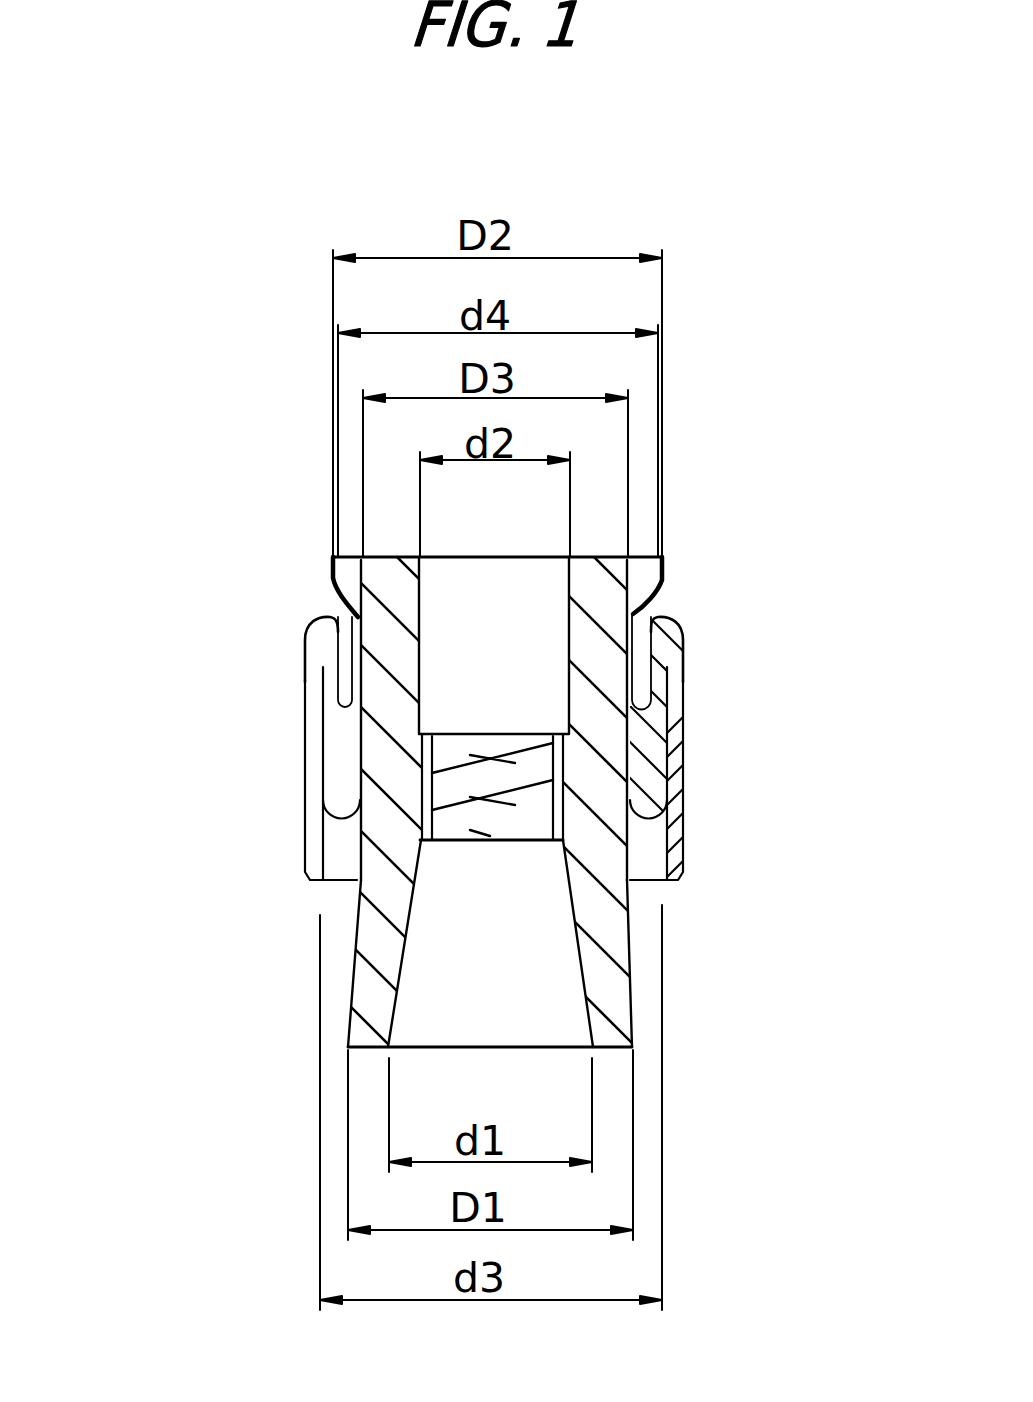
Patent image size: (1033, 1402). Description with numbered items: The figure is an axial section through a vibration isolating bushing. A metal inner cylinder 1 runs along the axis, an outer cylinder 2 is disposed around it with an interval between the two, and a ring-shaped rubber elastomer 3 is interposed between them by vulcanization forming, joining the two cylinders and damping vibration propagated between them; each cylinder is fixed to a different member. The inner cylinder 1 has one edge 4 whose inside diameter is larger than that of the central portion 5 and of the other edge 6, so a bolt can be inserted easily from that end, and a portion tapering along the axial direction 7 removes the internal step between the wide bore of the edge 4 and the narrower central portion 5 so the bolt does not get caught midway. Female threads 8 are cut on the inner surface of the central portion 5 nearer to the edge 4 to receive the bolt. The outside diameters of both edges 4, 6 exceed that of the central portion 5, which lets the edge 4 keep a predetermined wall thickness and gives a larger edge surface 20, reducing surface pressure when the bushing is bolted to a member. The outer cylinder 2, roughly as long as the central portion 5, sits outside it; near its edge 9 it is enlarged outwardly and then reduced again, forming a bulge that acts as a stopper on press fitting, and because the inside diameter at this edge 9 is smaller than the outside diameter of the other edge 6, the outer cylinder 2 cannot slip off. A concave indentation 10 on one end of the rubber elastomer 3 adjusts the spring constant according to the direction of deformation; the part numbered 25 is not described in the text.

The inner cylinder 1 is at (642, 942).
The outer cylinder 2 is at (702, 771).
The rubber elastomer 3 is at (683, 713).
The one edge 4 is at (612, 997).
The central portion 5 is at (397, 720).
The other edge 6 is at (377, 575).
The tapering portion 7 is at (404, 877).
The female threads 8 is at (487, 758).
The edge of outer cylinder 9 is at (695, 628).
The concave indentation 10 is at (300, 640).
The edge surface 20 is at (612, 1048).
The top end surface 25 is at (379, 550).